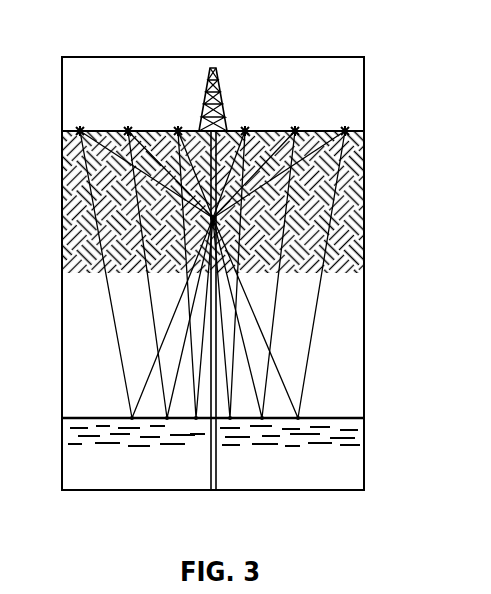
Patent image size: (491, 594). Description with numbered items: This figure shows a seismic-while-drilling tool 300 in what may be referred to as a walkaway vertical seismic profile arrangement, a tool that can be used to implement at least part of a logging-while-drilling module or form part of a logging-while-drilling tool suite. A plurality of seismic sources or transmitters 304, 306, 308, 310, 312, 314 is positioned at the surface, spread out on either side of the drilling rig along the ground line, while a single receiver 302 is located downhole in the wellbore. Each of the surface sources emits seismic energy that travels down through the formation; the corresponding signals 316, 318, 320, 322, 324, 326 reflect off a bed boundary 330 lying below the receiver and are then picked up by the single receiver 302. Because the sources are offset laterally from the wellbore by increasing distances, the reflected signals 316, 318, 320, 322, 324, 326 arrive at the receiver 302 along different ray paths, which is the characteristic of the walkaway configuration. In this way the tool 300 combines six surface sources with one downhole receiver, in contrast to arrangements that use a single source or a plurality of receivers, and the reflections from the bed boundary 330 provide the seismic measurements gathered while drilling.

The seismic-while-drilling tool 300 is at (250, 48).
The receiver 302 is at (218, 217).
The seismic source 304 is at (78, 128).
The seismic source 306 is at (127, 128).
The seismic source 308 is at (177, 128).
The seismic source 310 is at (247, 128).
The seismic source 312 is at (297, 128).
The seismic source 314 is at (347, 128).
The signal 316 is at (301, 393).
The signal 318 is at (268, 376).
The signal 320 is at (238, 340).
The signal 322 is at (190, 342).
The signal 324 is at (162, 377).
The signal 326 is at (126, 399).
The bed boundary 330 is at (356, 437).